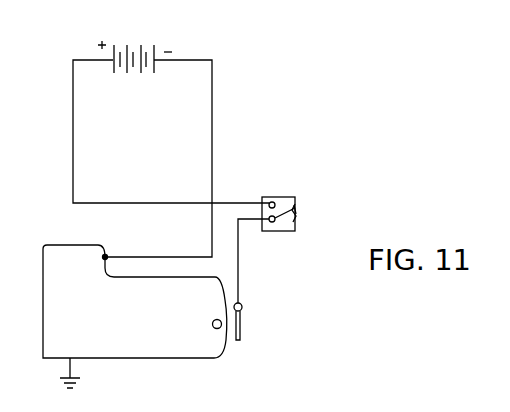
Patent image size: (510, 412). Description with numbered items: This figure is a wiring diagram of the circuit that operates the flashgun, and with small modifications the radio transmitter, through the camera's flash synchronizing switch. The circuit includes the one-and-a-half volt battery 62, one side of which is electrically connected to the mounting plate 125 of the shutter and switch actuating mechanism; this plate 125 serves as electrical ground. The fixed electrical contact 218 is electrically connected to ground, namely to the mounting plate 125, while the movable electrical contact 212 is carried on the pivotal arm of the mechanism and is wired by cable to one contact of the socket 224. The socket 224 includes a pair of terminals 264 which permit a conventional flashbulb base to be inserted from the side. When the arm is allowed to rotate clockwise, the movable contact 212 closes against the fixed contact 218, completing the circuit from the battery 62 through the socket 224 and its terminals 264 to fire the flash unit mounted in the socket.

The battery 62 is at (155, 48).
The mounting plate 125 is at (151, 323).
The fixed contact 218 is at (212, 326).
The electrical contact 212 is at (244, 323).
The socket 224 is at (276, 203).
The terminals 264 is at (294, 210).